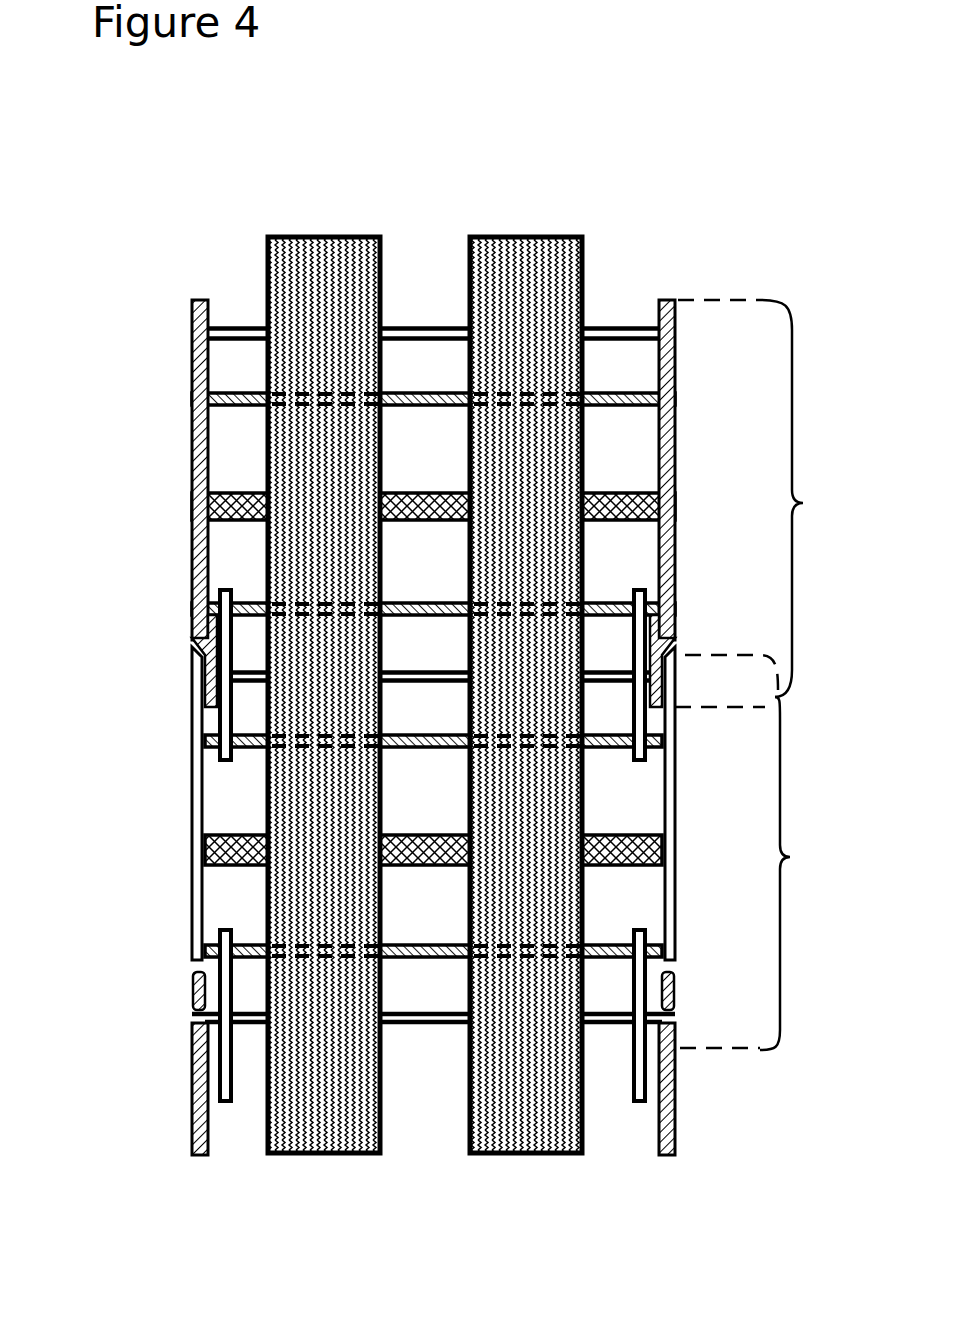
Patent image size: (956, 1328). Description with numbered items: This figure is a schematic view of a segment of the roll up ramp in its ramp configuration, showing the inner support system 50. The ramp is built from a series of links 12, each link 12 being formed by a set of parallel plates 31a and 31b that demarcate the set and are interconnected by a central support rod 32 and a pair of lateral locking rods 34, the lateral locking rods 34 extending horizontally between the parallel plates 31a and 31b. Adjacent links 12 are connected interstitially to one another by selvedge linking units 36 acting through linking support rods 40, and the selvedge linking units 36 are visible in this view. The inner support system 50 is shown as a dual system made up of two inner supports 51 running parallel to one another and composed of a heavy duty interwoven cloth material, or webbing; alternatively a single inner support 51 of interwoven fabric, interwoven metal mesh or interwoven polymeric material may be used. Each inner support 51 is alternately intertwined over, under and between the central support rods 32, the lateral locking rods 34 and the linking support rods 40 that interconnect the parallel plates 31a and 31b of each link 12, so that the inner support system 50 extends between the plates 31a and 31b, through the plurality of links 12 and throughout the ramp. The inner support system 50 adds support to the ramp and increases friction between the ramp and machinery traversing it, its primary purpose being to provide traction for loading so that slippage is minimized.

The inner support system 50 is at (350, 78).
The inner support 51 is at (268, 248).
The parallel plate 31a is at (192, 450).
The parallel plate 31b is at (675, 458).
The link 12 is at (850, 487).
The selvedge linking unit 36 is at (192, 633).
The central support rod 32 is at (192, 853).
The lateral locking rod 34 is at (192, 945).
The linking support rod 40 is at (192, 1008).